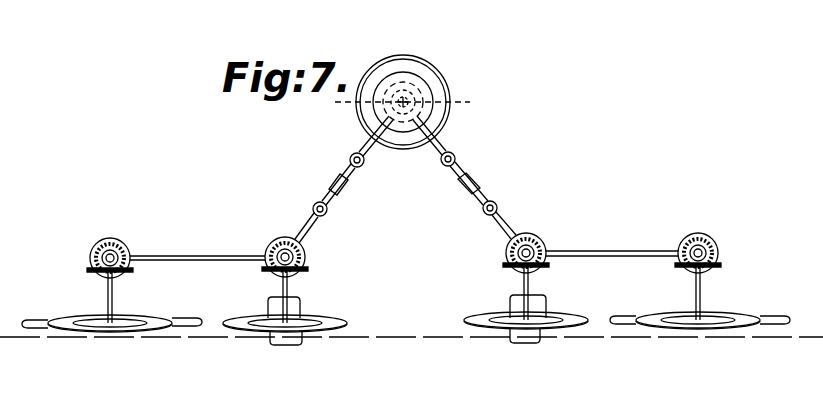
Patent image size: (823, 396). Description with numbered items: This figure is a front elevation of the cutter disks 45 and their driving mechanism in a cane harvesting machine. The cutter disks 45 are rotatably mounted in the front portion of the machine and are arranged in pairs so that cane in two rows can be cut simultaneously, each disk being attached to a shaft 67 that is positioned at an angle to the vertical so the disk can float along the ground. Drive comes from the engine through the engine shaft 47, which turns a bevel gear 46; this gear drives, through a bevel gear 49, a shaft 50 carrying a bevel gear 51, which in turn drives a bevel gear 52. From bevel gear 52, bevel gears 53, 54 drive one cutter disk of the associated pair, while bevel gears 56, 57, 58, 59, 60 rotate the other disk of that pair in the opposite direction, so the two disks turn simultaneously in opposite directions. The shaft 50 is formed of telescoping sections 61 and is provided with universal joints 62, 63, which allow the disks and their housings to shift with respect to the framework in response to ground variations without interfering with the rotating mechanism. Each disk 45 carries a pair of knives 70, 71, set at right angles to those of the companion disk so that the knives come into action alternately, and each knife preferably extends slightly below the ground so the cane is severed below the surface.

The cutter disk 45 is at (150, 333).
The bevel gear 46 is at (420, 84).
The engine shaft 47 is at (401, 58).
The bevel gear 49 is at (406, 102).
The shaft 50 is at (366, 148).
The bevel gear 51 is at (290, 238).
The bevel gear 52 is at (303, 257).
The bevel gear 53 is at (281, 248).
The bevel gear 54 is at (300, 270).
The bevel gear 56 is at (265, 252).
The bevel gear 57 is at (128, 248).
The bevel gear 58 is at (112, 238).
The bevel gear 59 is at (100, 256).
The bevel gear 60 is at (90, 272).
The telescoping sections 61 is at (352, 185).
The universal joint 62 is at (325, 216).
The universal joint 63 is at (365, 164).
The shaft 67 is at (114, 297).
The knife 70 is at (184, 318).
The knife 71 is at (33, 320).